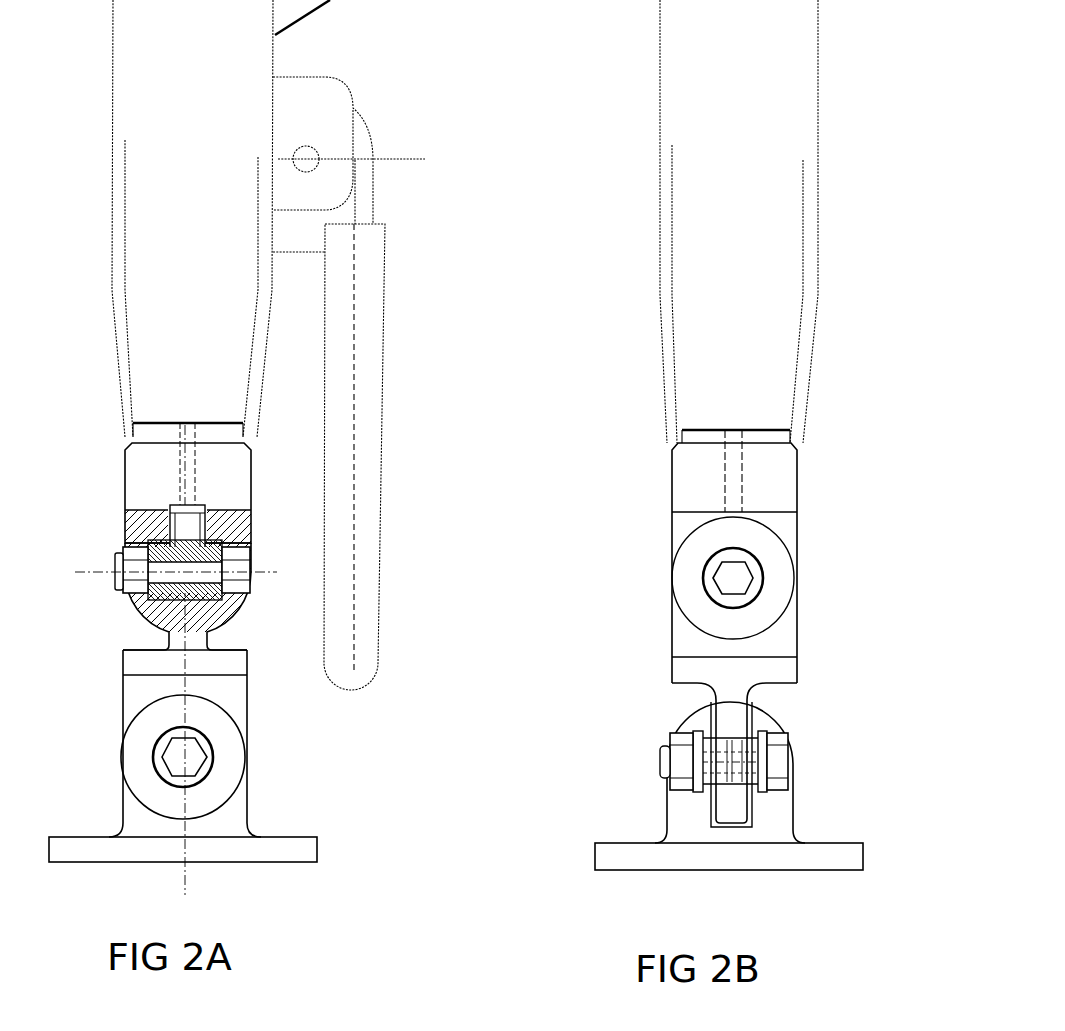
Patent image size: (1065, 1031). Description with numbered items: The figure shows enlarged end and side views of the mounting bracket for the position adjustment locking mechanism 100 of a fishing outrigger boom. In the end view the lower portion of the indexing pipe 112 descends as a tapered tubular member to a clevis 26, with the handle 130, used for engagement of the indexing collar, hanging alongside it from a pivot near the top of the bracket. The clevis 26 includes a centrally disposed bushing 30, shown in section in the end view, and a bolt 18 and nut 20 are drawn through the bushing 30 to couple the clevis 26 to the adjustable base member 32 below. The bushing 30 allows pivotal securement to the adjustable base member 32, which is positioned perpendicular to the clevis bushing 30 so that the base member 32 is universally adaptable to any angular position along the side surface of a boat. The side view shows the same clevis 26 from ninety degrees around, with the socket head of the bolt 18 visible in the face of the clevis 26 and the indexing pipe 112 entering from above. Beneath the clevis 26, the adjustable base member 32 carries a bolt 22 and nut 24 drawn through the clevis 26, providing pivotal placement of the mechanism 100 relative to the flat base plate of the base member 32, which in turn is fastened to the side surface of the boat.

In FIG. 2A, the position adjustment locking mechanism 100 is at (417, 192).
In FIG. 2B, the position adjustment locking mechanism 100 is at (715, 221).
In FIG. 2B, the indexing pipe 112 is at (660, 143).
In FIG. 2A, the handle 130 is at (383, 367).
In FIG. 2A, the clevis 26 is at (251, 482).
In FIG. 2B, the clevis 26 is at (672, 493).
In FIG. 2A, the bolt 18 is at (248, 567).
In FIG. 2B, the bolt 18 is at (707, 580).
In FIG. 2A, the nut 20 is at (118, 550).
In FIG. 2B, the bolt 22 is at (760, 733).
In FIG. 2B, the nut 24 is at (662, 740).
In FIG. 2A, the bushing 30 is at (142, 612).
In FIG. 2A, the adjustable base member 32 is at (288, 840).
In FIG. 2B, the adjustable base member 32 is at (593, 860).